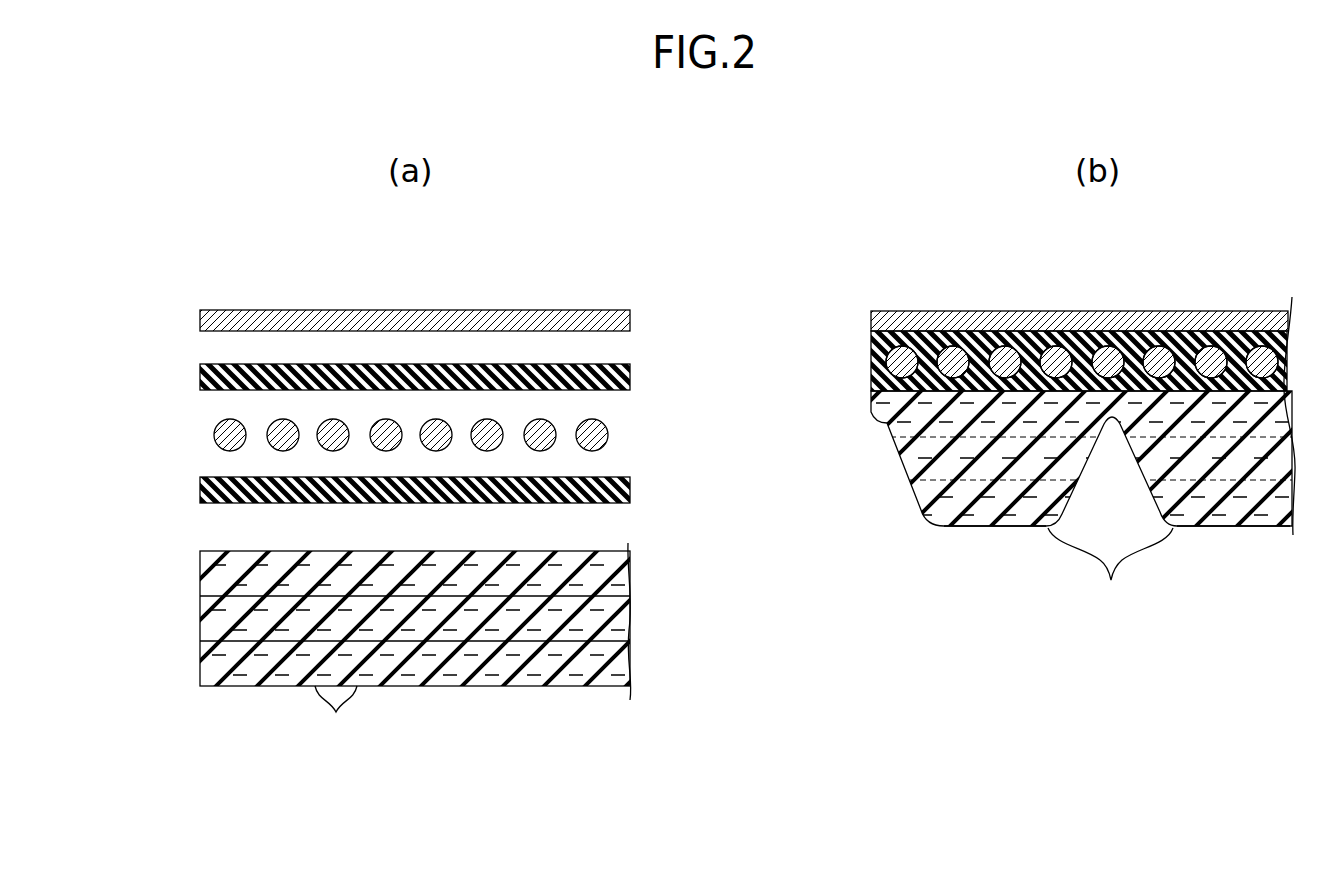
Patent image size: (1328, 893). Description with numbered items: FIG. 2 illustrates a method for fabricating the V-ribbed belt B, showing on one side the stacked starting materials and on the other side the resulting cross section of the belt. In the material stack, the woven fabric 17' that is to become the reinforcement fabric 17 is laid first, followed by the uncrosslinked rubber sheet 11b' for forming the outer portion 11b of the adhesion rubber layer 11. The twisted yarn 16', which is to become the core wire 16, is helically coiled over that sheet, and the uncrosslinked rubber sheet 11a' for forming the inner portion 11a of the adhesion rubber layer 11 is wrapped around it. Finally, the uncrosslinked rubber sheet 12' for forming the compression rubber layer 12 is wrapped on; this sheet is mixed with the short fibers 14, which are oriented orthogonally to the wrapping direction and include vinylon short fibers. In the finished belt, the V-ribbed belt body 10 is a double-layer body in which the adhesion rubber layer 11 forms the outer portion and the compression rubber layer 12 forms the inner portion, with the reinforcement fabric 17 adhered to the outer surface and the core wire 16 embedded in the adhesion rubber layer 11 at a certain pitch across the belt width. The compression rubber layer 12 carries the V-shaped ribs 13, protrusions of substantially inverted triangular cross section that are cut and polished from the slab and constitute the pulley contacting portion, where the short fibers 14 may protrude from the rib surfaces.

The woven fabric 17' is at (371, 319).
The uncrosslinked rubber sheet 11b' is at (365, 374).
The twisted yarn 16' is at (360, 434).
The uncrosslinked rubber sheet 11a' is at (365, 489).
The uncrosslinked rubber sheet 12' is at (371, 621).
The short fibers 14 is at (744, 639).
The V-ribbed belt body 10 is at (1016, 399).
The V-ribbed belt B is at (1210, 289).
The reinforcement fabric 17 is at (1041, 316).
The adhesion rubber layer 11 is at (1009, 333).
The outer portion 11b is at (1035, 347).
The inner portion 11a is at (1035, 381).
The core wire 16 is at (1082, 322).
The compression rubber layer 12 is at (1072, 464).
The V-shaped ribs 13 is at (1028, 530).